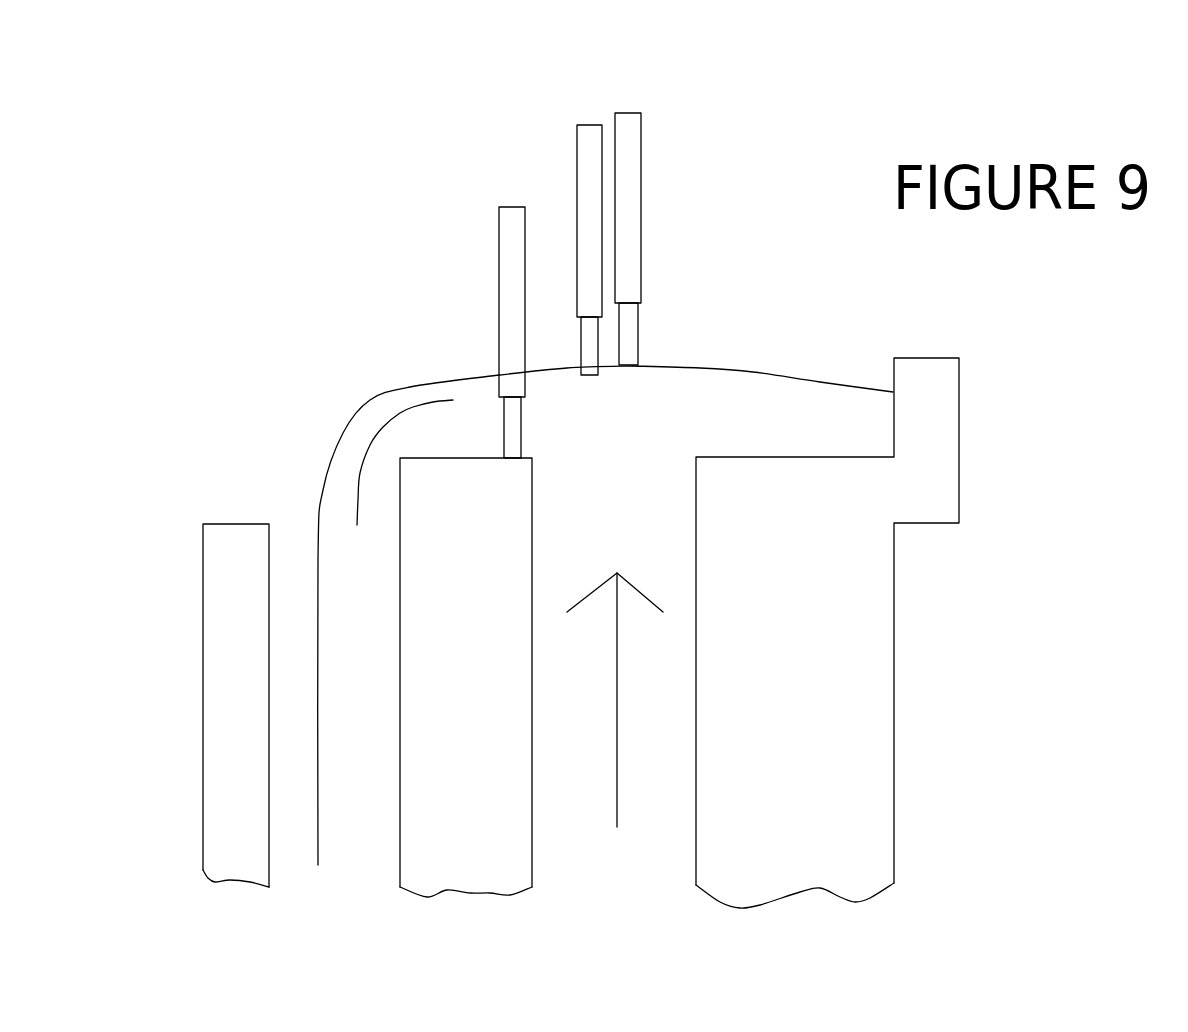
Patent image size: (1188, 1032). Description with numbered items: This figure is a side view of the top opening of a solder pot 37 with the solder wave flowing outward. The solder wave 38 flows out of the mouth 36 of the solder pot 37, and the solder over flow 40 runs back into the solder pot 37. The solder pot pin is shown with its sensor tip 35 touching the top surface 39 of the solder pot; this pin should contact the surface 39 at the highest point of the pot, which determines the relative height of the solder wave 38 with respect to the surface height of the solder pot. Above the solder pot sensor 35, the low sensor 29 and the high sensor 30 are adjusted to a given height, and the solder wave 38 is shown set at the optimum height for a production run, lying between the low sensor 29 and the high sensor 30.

The tip of low sensing pin 29 is at (587, 367).
The tip of high sensing pin 30 is at (628, 360).
The tip of solder pot pin 35 is at (512, 413).
The mouth of solder pot 36 is at (633, 460).
The solder pot 37 is at (472, 680).
The surface of solder wave 38 is at (663, 365).
The top surface of solder pot 39 is at (433, 412).
The overflow solder wave 40 is at (360, 460).